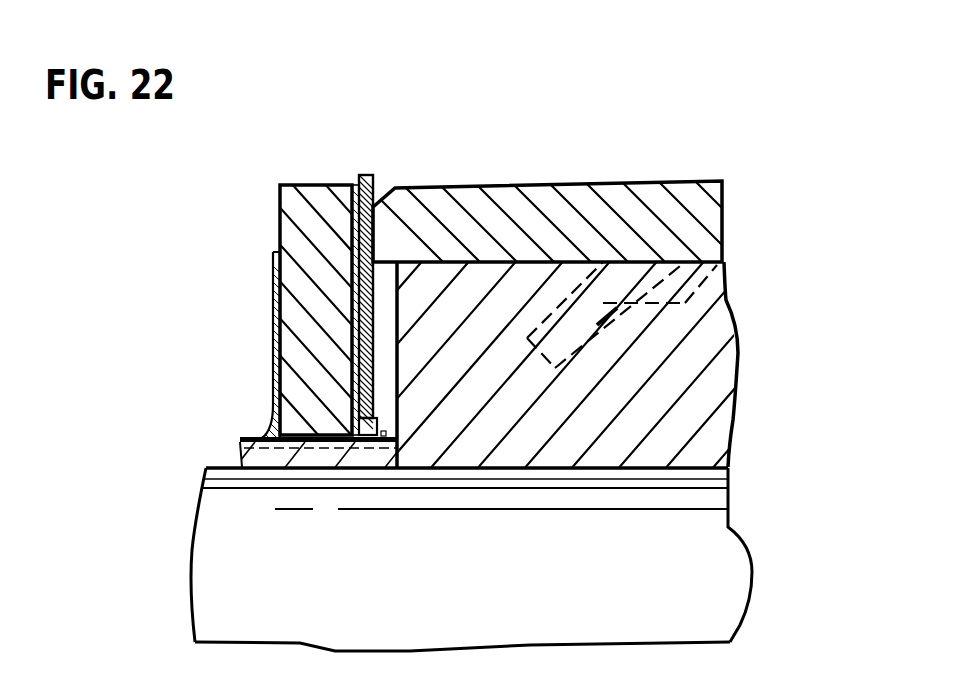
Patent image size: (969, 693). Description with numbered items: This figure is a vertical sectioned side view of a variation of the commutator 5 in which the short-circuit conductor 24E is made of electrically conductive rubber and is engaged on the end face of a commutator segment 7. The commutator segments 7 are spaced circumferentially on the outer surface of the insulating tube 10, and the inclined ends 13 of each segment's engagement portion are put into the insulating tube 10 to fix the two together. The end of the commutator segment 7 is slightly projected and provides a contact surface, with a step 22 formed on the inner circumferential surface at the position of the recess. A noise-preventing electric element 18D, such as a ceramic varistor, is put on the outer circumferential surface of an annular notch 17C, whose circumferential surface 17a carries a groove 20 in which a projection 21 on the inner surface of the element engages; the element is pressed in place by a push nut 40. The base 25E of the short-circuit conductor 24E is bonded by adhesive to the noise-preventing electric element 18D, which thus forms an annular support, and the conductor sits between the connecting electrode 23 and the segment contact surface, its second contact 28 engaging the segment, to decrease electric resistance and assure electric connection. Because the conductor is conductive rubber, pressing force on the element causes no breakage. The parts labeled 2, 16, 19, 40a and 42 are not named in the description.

The base plate 2 is at (735, 573).
The commutator 5 is at (568, 296).
The commutator segment 7 is at (683, 189).
The insulating tube 10 is at (688, 428).
The ends of the engagement portion 13 is at (583, 342).
The seal strip (7a) 16 is at (371, 172).
The circumferential surface 17a is at (388, 445).
The annular notch 17C is at (355, 393).
The noise-preventing electric element 18D is at (322, 287).
The joint line 19 is at (353, 441).
The groove 20 is at (250, 437).
The projection 21 is at (280, 441).
The step 22 is at (352, 268).
The connecting electrode 23 is at (322, 225).
The short-circuit conductor 24E is at (353, 308).
The base 25E is at (390, 424).
The second contact 28 is at (380, 300).
The push nut 40 is at (272, 313).
The bent portion 40a is at (268, 434).
The insulating layer 42 is at (354, 340).